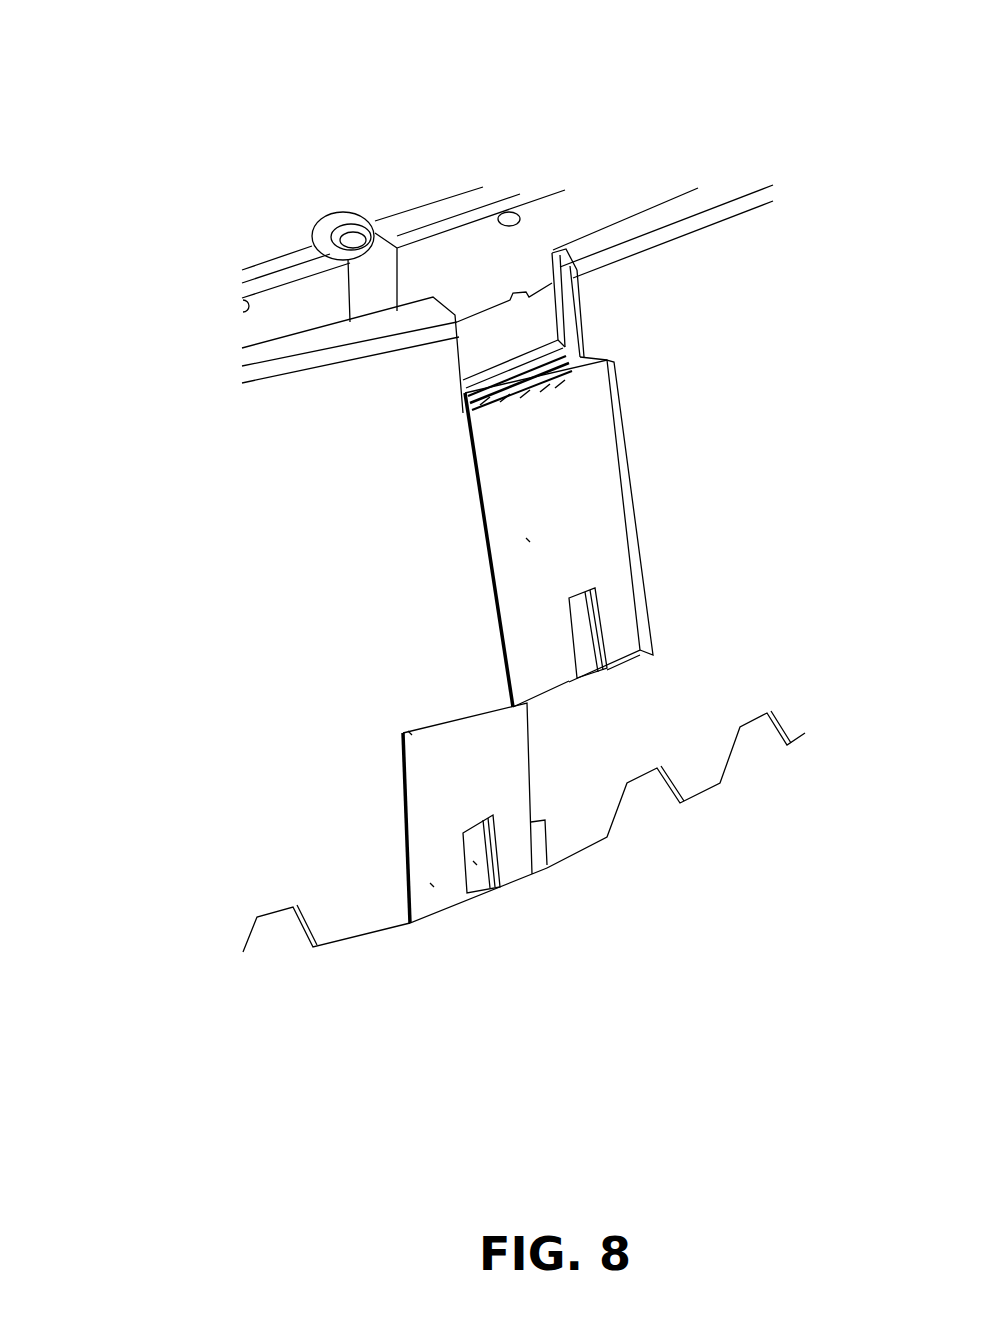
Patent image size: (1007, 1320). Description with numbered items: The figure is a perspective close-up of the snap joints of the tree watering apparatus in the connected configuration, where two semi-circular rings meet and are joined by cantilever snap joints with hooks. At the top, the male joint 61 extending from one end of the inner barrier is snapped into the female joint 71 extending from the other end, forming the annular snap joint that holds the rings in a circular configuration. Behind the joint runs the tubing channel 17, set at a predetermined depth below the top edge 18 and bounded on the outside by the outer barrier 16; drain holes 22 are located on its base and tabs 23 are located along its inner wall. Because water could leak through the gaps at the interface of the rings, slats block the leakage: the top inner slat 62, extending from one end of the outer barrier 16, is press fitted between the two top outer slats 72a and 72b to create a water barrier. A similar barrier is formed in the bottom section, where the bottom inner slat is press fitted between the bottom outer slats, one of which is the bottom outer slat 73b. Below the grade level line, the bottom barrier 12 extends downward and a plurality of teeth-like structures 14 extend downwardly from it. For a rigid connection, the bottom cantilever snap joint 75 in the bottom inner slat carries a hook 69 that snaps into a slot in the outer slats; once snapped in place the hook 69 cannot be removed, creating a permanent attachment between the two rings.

The bottom barrier 12 is at (308, 818).
The teeth-like structures 14 is at (792, 722).
The outer barrier 16 is at (747, 428).
The tubing channel 17 is at (545, 230).
The top edge 18 is at (432, 207).
The drain holes 22 is at (510, 300).
The tabs 23 is at (513, 213).
The male joint 61 is at (362, 232).
The top inner slat 62 is at (553, 348).
The hook 69 is at (410, 733).
The female joint 71 is at (322, 232).
The top outer slat 72a is at (560, 357).
The top outer slat 72b is at (528, 540).
The bottom outer slat 73b is at (432, 885).
The bottom cantilever snap joint 75 is at (607, 627).